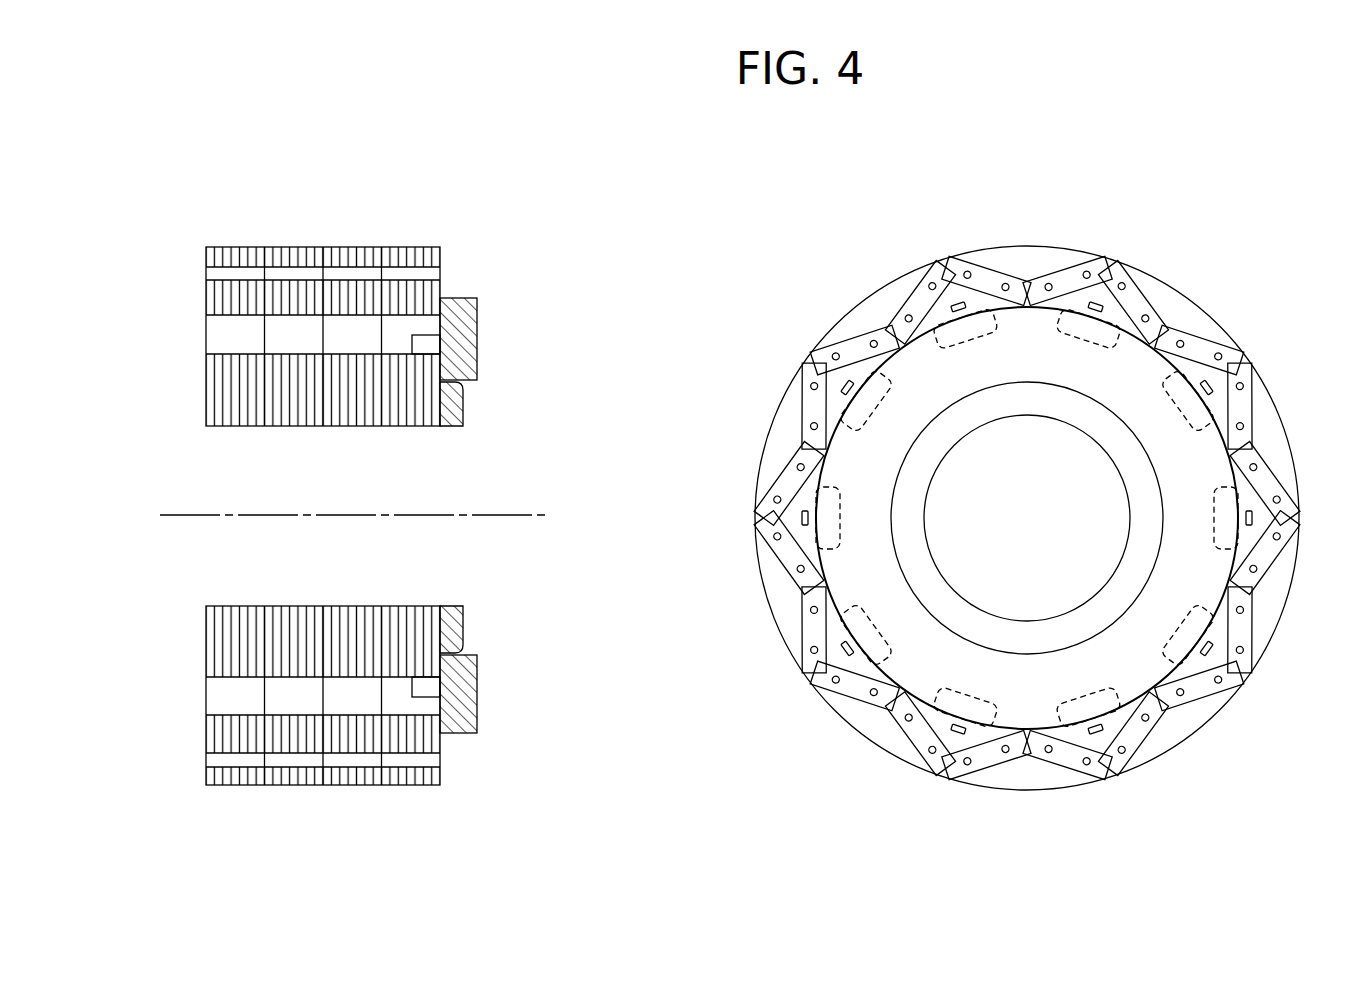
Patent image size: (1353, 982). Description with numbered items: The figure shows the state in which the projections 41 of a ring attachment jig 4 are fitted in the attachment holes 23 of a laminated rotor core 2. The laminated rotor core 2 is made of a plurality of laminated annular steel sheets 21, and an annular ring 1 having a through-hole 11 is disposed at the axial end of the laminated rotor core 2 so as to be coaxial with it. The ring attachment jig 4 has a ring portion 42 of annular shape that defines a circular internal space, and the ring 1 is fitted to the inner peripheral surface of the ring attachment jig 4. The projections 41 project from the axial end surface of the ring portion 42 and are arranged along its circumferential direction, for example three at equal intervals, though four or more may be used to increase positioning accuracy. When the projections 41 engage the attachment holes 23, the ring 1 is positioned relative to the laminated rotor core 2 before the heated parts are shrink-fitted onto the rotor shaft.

The ring 1 is at (465, 405).
The through-hole 11 is at (465, 550).
The laminated rotor core 2 is at (218, 298).
The laminated annular steel sheets 21 is at (241, 260).
The attachment holes 23 is at (235, 338).
The ring attachment jig 4 is at (866, 519).
The projections 41 is at (429, 350).
The ring portion 42 is at (478, 338).